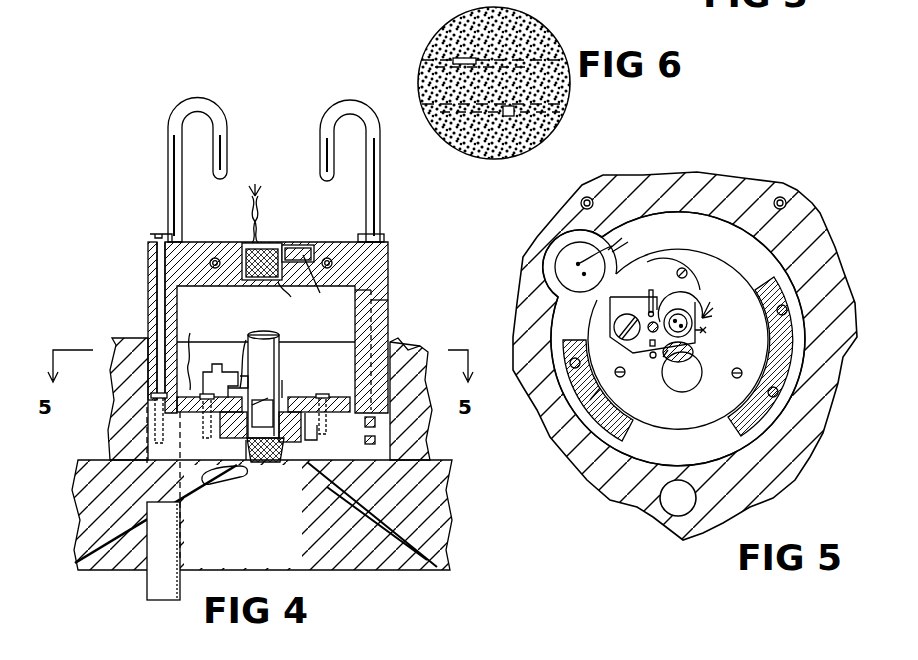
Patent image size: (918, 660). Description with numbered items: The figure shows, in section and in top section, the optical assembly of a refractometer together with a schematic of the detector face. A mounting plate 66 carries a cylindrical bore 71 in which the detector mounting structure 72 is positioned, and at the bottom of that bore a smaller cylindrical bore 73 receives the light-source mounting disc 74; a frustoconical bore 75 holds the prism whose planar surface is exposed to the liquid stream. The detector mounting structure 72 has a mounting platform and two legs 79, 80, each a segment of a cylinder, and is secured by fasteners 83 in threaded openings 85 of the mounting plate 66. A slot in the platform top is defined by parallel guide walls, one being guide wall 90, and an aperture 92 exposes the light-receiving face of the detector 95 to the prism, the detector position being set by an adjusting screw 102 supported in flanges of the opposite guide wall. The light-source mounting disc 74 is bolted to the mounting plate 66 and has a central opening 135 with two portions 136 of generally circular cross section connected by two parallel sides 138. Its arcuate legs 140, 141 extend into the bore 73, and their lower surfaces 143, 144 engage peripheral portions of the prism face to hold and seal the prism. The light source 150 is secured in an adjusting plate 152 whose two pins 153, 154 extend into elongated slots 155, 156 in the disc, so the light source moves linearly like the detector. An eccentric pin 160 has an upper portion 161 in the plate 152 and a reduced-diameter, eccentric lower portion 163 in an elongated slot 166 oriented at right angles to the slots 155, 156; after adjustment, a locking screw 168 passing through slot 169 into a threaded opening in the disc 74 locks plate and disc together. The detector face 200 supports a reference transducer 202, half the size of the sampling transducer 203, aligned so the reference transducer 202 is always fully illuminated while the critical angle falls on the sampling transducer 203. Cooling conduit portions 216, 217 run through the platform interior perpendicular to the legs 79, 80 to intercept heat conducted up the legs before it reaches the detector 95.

In FIG. 4, the mounting plate 66 is at (412, 432).
In FIG. 5, the mounting plate 66 is at (692, 188).
In FIG. 4, the cylindrical bore 71 is at (450, 352).
In FIG. 4, the detector mounting structure 72 is at (120, 264).
In FIG. 4, the smaller cylindrical bore 73 is at (326, 436).
In FIG. 4, the light-source mounting disc 74 is at (310, 398).
In FIG. 5, the light-source mounting disc 74 is at (660, 255).
In FIG. 4, the frustoconical bore 75 is at (232, 483).
In FIG. 4, the leg 79 is at (150, 318).
In FIG. 5, the leg 79 is at (590, 400).
In FIG. 4, the leg 80 is at (378, 330).
In FIG. 5, the leg 80 is at (797, 340).
In FIG. 4, the fasteners 83 is at (378, 305).
In FIG. 5, the fasteners 83 is at (572, 364).
In FIG. 4, the threaded openings 85 is at (155, 430).
In FIG. 4, the guide wall 90 is at (250, 243).
In FIG. 4, the aperture 92 is at (292, 296).
In FIG. 4, the detector 95 is at (276, 243).
In FIG. 4, the adjusting screw 102 is at (326, 283).
In FIG. 5, the central opening 135 is at (706, 330).
In FIG. 5, the portions of generally circular cross section 136 is at (692, 297).
In FIG. 4, the parallel sides 138 is at (283, 393).
In FIG. 5, the parallel sides 138 is at (700, 345).
In FIG. 4, the arcuate leg 140 is at (228, 448).
In FIG. 4, the arcuate leg 141 is at (308, 436).
In FIG. 4, the lower surface 143 is at (255, 462).
In FIG. 4, the lower surface 144 is at (288, 458).
In FIG. 4, the light source 150 is at (265, 333).
In FIG. 4, the adjusting plate 152 is at (202, 390).
In FIG. 5, the adjusting plate 152 is at (608, 285).
In FIG. 5, the pin 153 is at (666, 277).
In FIG. 5, the pin 154 is at (640, 363).
In FIG. 5, the elongated slot 155 is at (660, 262).
In FIG. 5, the elongated slot 156 is at (663, 357).
In FIG. 4, the eccentric pin 160 is at (236, 352).
In FIG. 5, the eccentric pin 160 is at (678, 318).
In FIG. 4, the upper portion 161 is at (266, 392).
In FIG. 4, the lower portion 163 is at (284, 384).
In FIG. 5, the elongated slot 166 is at (632, 343).
In FIG. 5, the locking screw 168 is at (617, 327).
In FIG. 5, the slot 169 is at (649, 300).
In FIG. 6, the detector face 200 is at (531, 41).
In FIG. 6, the reference transducer 202 is at (514, 108).
In FIG. 6, the sampling transducer 203 is at (462, 58).
In FIG. 4, the conduit portion 216 is at (327, 257).
In FIG. 4, the conduit portion 217 is at (213, 257).